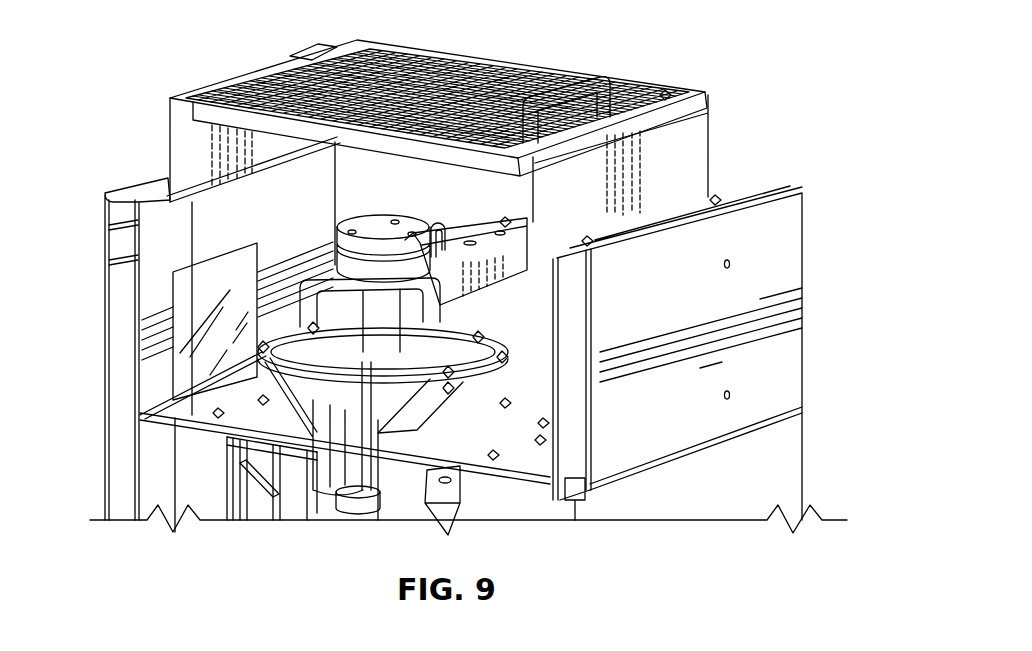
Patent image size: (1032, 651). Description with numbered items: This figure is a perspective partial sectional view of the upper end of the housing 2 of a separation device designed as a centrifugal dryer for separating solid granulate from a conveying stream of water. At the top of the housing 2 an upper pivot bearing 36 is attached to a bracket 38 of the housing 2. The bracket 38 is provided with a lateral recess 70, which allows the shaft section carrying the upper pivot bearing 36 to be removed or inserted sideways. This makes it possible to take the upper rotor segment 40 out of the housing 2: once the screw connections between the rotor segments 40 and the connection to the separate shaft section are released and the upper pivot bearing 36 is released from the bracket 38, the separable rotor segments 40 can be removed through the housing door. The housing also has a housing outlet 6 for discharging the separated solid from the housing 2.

The housing 2 is at (800, 326).
The upper pivot bearing 36 is at (380, 228).
The bracket 38 is at (517, 237).
The lateral recess 70 is at (423, 300).
The housing outlet 6 is at (195, 445).
The rotor segment 40 is at (273, 497).